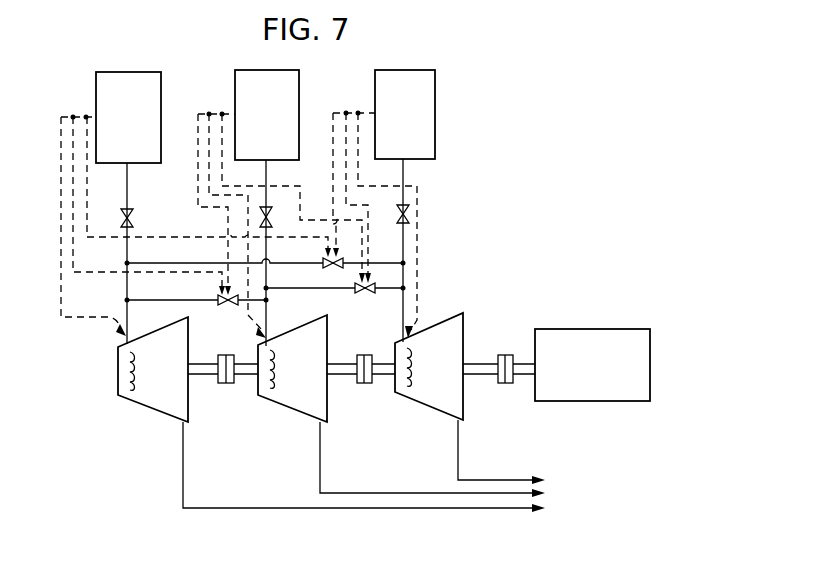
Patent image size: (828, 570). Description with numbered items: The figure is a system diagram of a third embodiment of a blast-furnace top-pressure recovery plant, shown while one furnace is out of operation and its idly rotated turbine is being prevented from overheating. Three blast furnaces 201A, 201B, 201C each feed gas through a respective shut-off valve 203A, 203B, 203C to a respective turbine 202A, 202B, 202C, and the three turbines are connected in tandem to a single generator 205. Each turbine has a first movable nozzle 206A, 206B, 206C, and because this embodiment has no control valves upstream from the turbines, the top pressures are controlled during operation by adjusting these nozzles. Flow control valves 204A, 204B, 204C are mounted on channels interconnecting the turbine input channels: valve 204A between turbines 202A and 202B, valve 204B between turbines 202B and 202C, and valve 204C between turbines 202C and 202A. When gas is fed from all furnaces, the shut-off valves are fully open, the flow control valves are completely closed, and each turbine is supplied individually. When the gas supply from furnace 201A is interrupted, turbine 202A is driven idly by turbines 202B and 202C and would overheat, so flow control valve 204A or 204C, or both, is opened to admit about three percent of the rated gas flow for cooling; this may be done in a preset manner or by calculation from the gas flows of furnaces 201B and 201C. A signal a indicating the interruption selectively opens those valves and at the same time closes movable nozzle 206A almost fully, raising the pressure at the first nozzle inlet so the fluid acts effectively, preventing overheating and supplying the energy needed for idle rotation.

The signal a is at (72, 112).
The blast furnace 201A is at (196, 208).
The blast furnace 201B is at (281, 208).
The blast furnace 201C is at (384, 206).
The shut-off valve 203A is at (137, 208).
The shut-off valve 203B is at (271, 212).
The shut-off valve 203C is at (410, 212).
The flow control valve 204A is at (228, 305).
The flow control valve 204B is at (362, 292).
The flow control valve 204C is at (325, 265).
The turbine 202A is at (172, 410).
The turbine 202B is at (308, 409).
The turbine 202C is at (449, 409).
The first movable nozzle 206A is at (132, 398).
The first movable nozzle 206B is at (272, 396).
The first movable nozzle 206C is at (409, 396).
The generator 205 is at (651, 355).